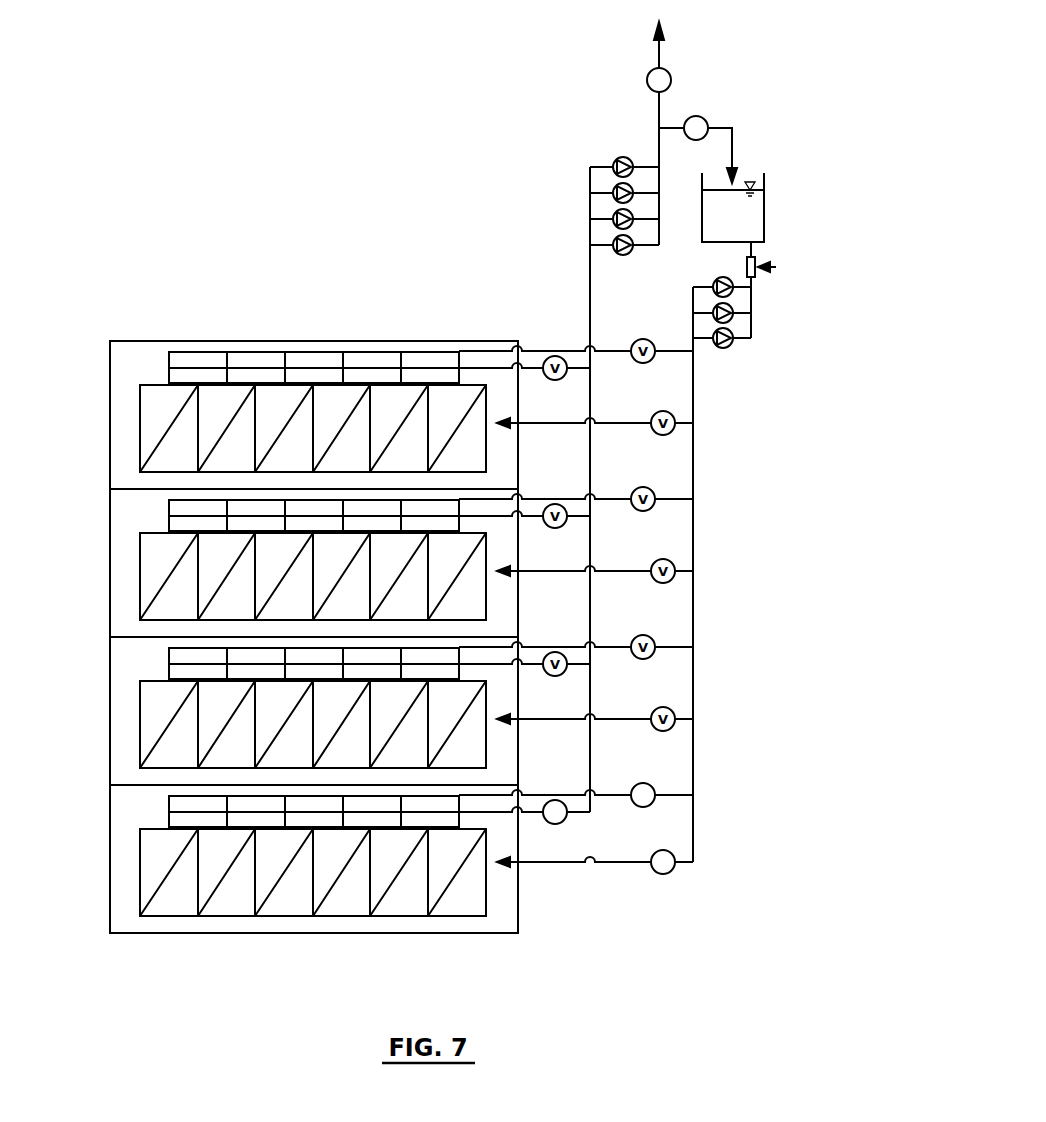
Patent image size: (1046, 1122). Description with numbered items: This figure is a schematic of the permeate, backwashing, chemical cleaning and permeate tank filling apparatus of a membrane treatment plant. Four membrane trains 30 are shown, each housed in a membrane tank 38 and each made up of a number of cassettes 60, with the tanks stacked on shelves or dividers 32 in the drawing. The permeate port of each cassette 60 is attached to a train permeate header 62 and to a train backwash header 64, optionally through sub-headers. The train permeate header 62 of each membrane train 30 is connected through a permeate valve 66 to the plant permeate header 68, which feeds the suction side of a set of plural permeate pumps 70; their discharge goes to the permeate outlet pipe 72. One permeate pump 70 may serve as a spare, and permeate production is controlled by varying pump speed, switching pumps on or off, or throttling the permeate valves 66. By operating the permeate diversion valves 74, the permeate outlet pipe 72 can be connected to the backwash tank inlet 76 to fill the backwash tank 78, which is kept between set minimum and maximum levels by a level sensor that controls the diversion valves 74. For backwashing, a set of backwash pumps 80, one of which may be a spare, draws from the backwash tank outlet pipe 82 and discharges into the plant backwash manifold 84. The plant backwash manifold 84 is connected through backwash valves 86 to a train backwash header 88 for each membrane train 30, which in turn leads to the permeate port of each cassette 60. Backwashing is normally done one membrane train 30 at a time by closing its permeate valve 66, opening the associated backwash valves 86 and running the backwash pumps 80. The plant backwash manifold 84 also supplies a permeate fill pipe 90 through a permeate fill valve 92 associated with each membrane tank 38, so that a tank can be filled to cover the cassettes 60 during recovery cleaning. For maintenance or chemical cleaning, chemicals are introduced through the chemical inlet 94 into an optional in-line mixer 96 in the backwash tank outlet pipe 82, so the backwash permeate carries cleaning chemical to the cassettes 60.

The membrane train 30 is at (138, 422).
The shelf 32 is at (123, 485).
The membrane tank 38 is at (133, 340).
The cassette 60 is at (158, 383).
The train permeate header 62 is at (532, 813).
The train backwash header 64 is at (647, 804).
The permeate valve 66 is at (555, 824).
The plant permeate header 68 is at (589, 280).
The permeate pump 70 is at (612, 160).
The permeate outlet pipe 72 is at (659, 108).
The permeate diversion valve 74 is at (696, 116).
The backwash tank inlet 76 is at (733, 148).
The backwash tank 78 is at (764, 200).
The backwash pump 80 is at (731, 346).
The backwash tank outlet pipe 82 is at (769, 340).
The plant backwash manifold 84 is at (695, 525).
The backwash valve 86 is at (615, 796).
The train backwash header 88 is at (522, 796).
The permeate fill pipe 90 is at (647, 864).
The permeate fill valve 92 is at (677, 867).
The chemical inlet 94 is at (776, 267).
The in-line mixer 96 is at (747, 265).